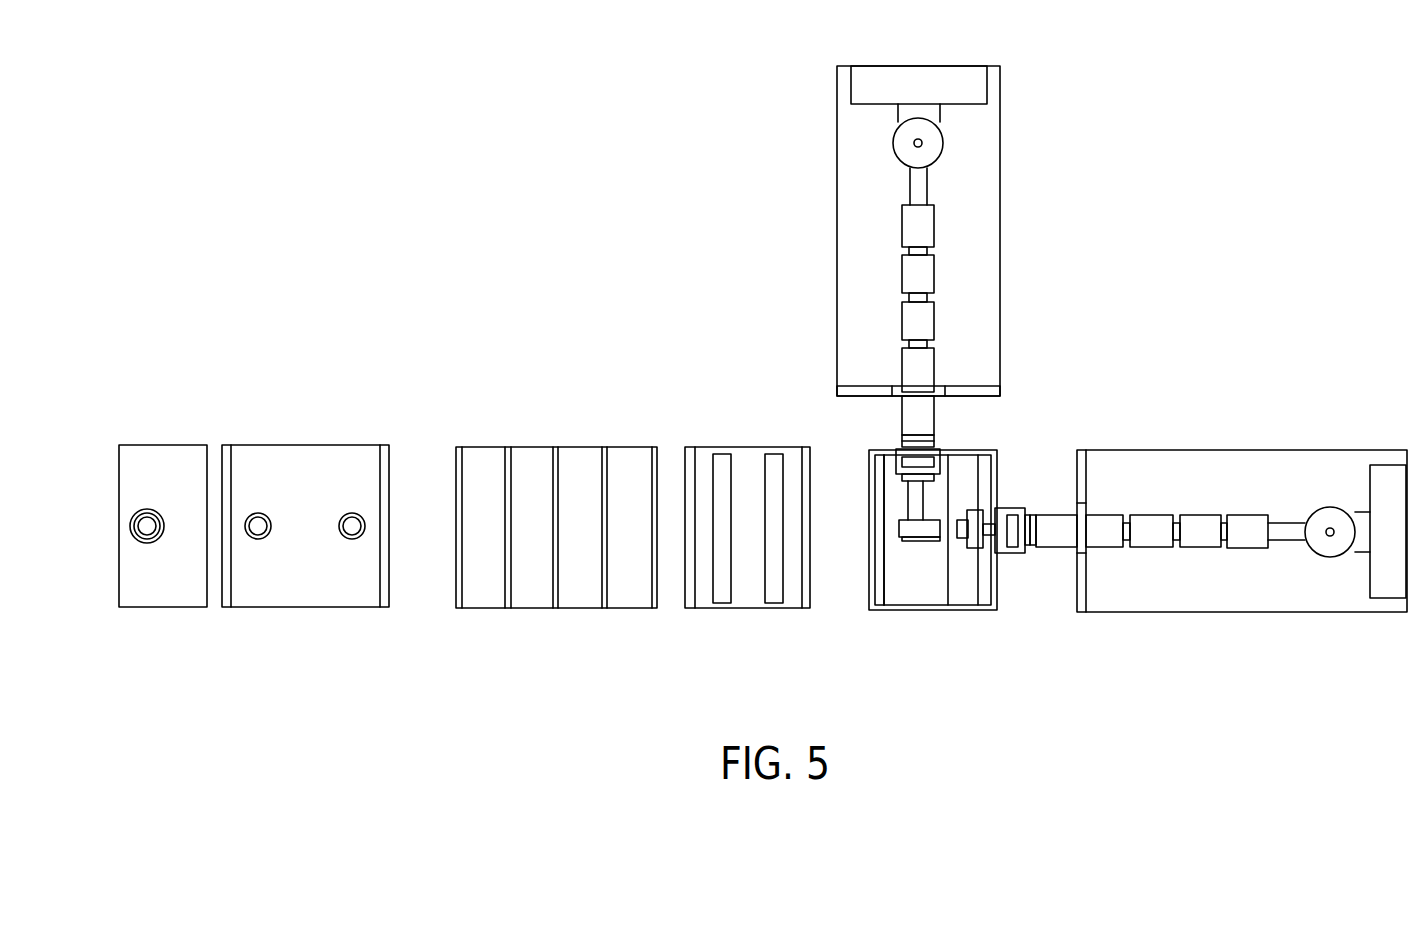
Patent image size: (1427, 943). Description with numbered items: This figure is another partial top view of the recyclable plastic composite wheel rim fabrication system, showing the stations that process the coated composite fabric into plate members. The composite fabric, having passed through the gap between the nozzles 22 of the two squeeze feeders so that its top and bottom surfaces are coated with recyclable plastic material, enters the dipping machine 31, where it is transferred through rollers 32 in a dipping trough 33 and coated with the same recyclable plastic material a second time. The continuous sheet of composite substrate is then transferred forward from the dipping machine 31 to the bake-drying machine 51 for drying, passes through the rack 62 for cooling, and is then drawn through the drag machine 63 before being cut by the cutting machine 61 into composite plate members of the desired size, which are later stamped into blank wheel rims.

The nozzle 22 is at (940, 540).
The dipping machine 31 is at (997, 580).
The roller 32 is at (900, 592).
The dipping trough 33 is at (878, 588).
The bake-drying machine 51 is at (748, 458).
The cutting machine 61 is at (165, 458).
The rack 62 is at (573, 457).
The drag machine 63 is at (322, 460).